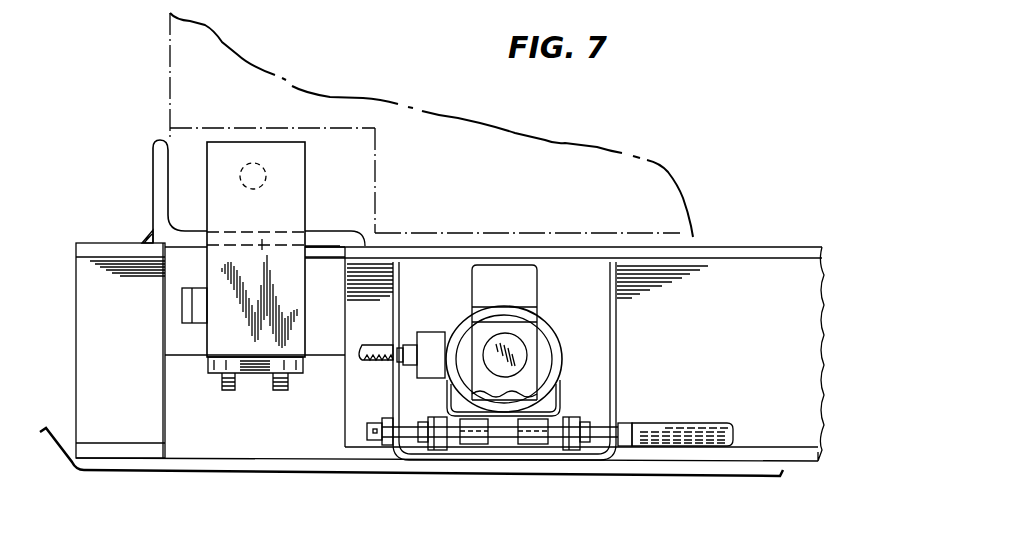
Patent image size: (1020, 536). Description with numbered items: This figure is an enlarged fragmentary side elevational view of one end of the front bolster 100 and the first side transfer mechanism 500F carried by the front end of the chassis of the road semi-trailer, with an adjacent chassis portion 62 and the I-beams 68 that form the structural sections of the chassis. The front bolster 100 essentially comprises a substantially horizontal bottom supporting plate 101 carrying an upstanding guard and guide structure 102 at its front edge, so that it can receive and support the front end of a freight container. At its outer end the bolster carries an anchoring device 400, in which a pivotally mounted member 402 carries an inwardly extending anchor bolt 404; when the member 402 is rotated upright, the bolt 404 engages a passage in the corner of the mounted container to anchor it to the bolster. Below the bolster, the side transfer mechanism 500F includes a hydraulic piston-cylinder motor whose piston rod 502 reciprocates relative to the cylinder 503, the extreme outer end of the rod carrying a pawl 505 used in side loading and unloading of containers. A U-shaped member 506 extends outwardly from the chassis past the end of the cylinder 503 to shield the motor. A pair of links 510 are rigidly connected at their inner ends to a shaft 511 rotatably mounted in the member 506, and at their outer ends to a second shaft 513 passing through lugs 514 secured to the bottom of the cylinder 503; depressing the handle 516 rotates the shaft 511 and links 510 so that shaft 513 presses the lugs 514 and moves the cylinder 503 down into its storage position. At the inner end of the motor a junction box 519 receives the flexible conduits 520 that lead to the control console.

The frame deck plate 62 is at (748, 247).
The I-beam 68 is at (78, 312).
The front bolster 100 is at (146, 189).
The bottom supporting plate 101 is at (325, 236).
The guard and guide structure 102 is at (155, 150).
The anchoring device 400 is at (190, 333).
The member 402 is at (229, 141).
The anchor bolt 404 is at (265, 188).
The first side transfer mechanism 500F is at (514, 266).
The piston rod 502 is at (522, 350).
The cylinder 503 is at (532, 332).
The pawl 505 is at (478, 279).
The U-shaped member 506 is at (613, 343).
The link 510 is at (436, 452).
The shaft 511 is at (373, 444).
The second shaft 513 is at (510, 446).
The lug 514 is at (541, 446).
The handle 516 is at (685, 424).
The junction box 519 is at (429, 338).
The flexible conduit 520 is at (378, 344).